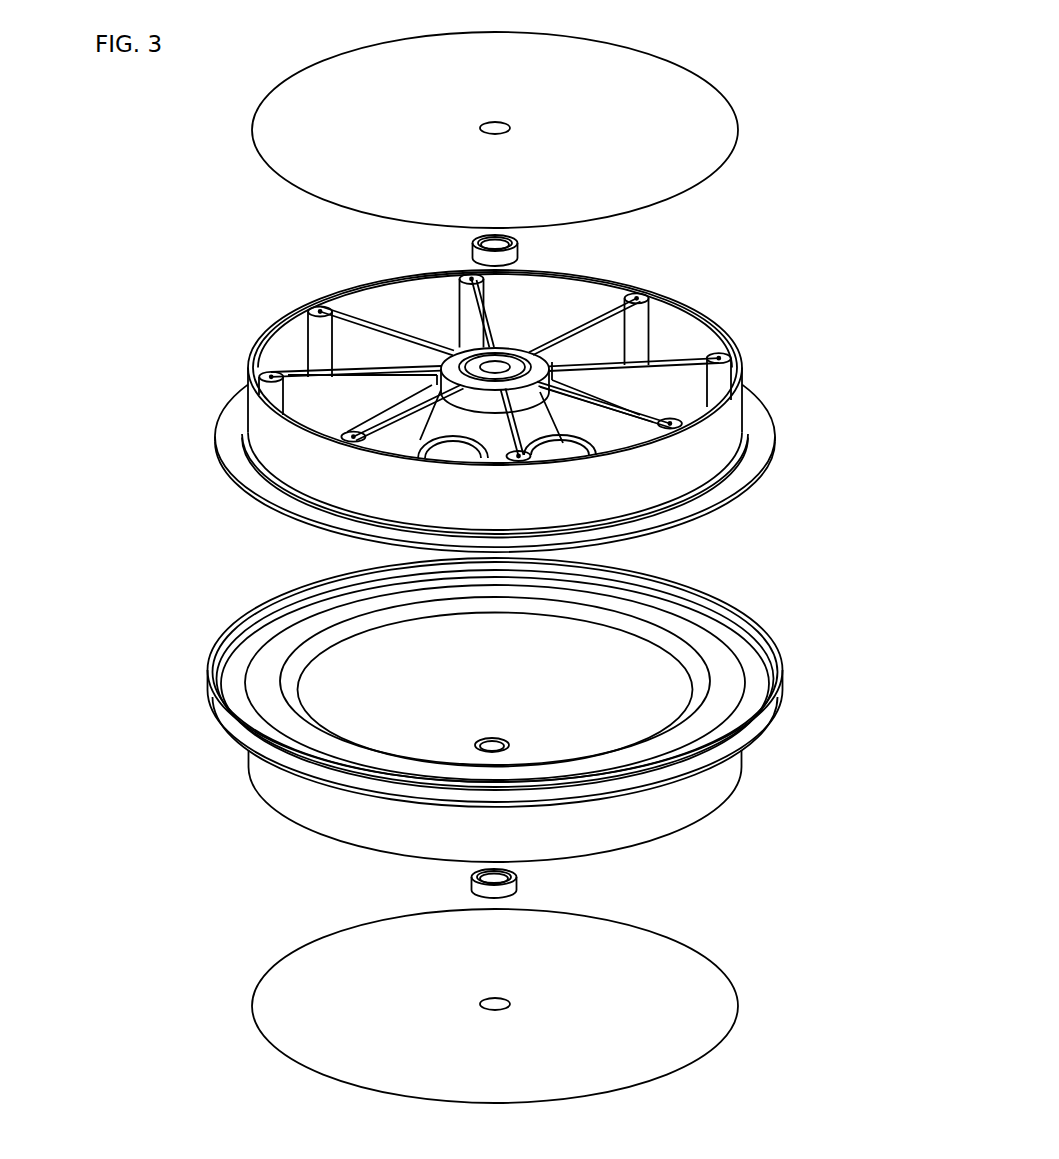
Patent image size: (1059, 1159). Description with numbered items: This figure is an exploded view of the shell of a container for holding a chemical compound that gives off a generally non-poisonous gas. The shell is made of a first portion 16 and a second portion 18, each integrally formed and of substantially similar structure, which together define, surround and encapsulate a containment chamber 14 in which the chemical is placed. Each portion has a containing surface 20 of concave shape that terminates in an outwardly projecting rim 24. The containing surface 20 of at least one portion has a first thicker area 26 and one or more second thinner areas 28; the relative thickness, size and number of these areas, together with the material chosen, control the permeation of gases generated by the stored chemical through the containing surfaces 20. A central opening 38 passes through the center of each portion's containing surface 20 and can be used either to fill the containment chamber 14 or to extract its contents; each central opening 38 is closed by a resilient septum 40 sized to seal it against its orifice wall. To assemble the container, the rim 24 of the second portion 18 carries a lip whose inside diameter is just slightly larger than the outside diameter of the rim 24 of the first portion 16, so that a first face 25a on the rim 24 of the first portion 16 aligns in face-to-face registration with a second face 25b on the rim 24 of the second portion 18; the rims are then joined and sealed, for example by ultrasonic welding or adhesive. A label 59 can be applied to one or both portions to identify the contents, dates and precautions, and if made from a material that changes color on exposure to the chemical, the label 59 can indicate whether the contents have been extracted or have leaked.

The containment chamber 14 is at (638, 705).
The first portion 16 is at (464, 588).
The second portion 18 is at (510, 710).
The containing surface 20 is at (375, 713).
The outwardly projecting rim 24 is at (760, 483).
The first face 25a is at (705, 520).
The second face 25b is at (783, 678).
The first thicker area 26 is at (393, 405).
The second thinner area 28 is at (443, 448).
The central opening 38 is at (477, 363).
The resilient septum 40 is at (497, 250).
The label 59 is at (660, 155).